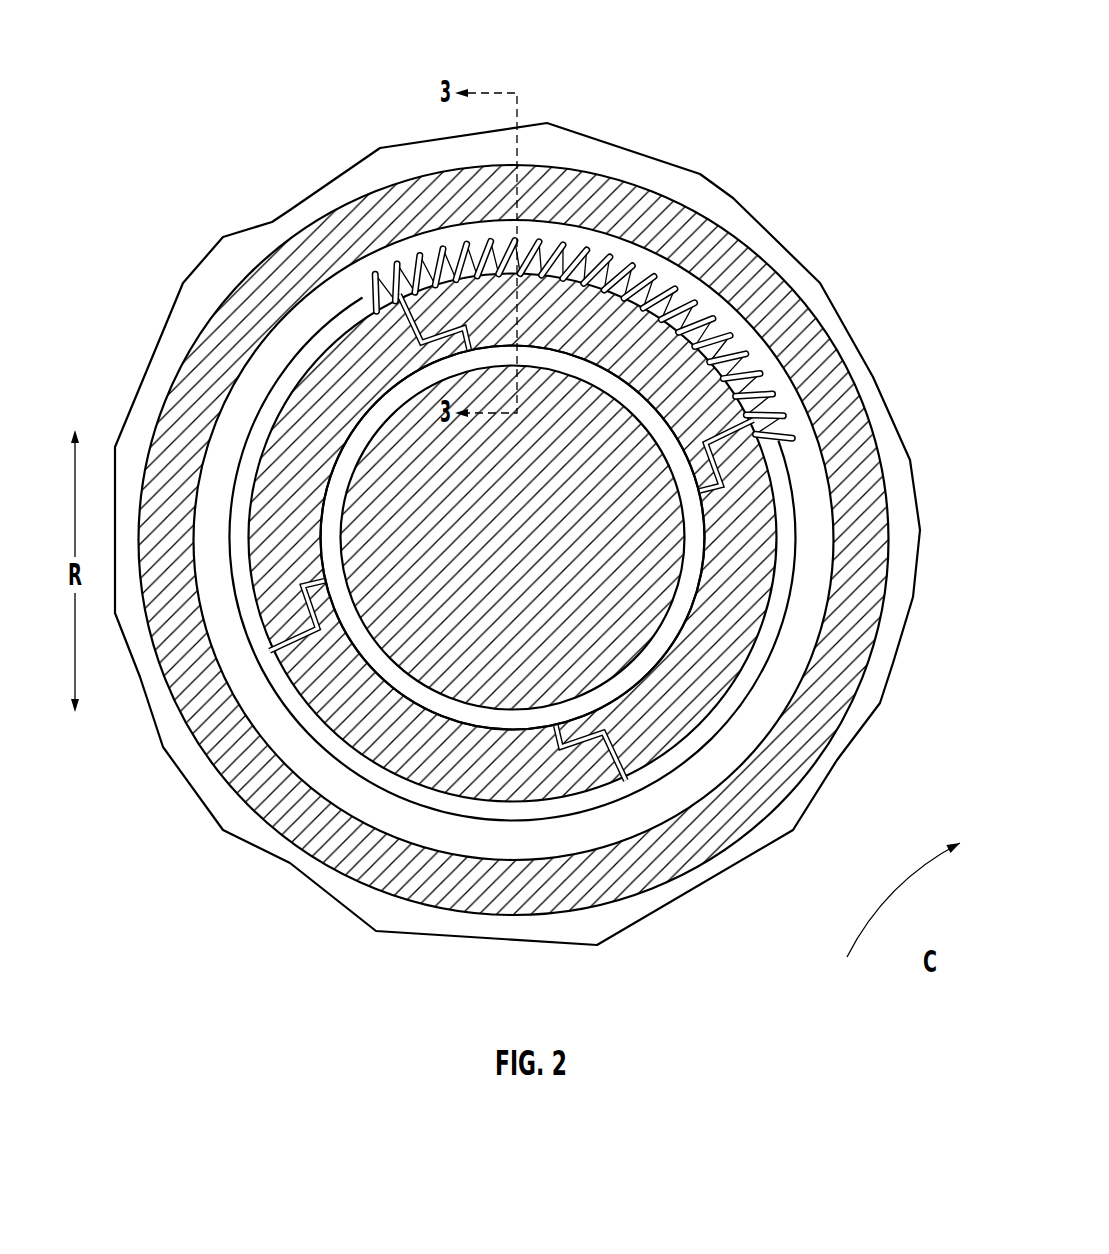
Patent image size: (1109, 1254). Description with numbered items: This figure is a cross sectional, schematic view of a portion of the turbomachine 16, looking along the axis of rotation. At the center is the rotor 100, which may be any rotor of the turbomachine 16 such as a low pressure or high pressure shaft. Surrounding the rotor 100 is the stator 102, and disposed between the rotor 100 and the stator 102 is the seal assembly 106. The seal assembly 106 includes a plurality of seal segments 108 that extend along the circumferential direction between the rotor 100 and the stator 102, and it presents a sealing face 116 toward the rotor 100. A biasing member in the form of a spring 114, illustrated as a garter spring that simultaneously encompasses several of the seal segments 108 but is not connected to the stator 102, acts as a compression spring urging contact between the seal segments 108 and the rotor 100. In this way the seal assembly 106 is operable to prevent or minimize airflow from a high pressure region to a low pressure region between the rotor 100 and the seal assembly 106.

The turbomachine 16 is at (168, 145).
The rotor 100 is at (484, 546).
The stator 102 is at (853, 377).
The seal assembly 106 is at (742, 592).
The seal segments 108 is at (683, 720).
The spring 114 is at (645, 265).
The sealing face 116 is at (549, 355).